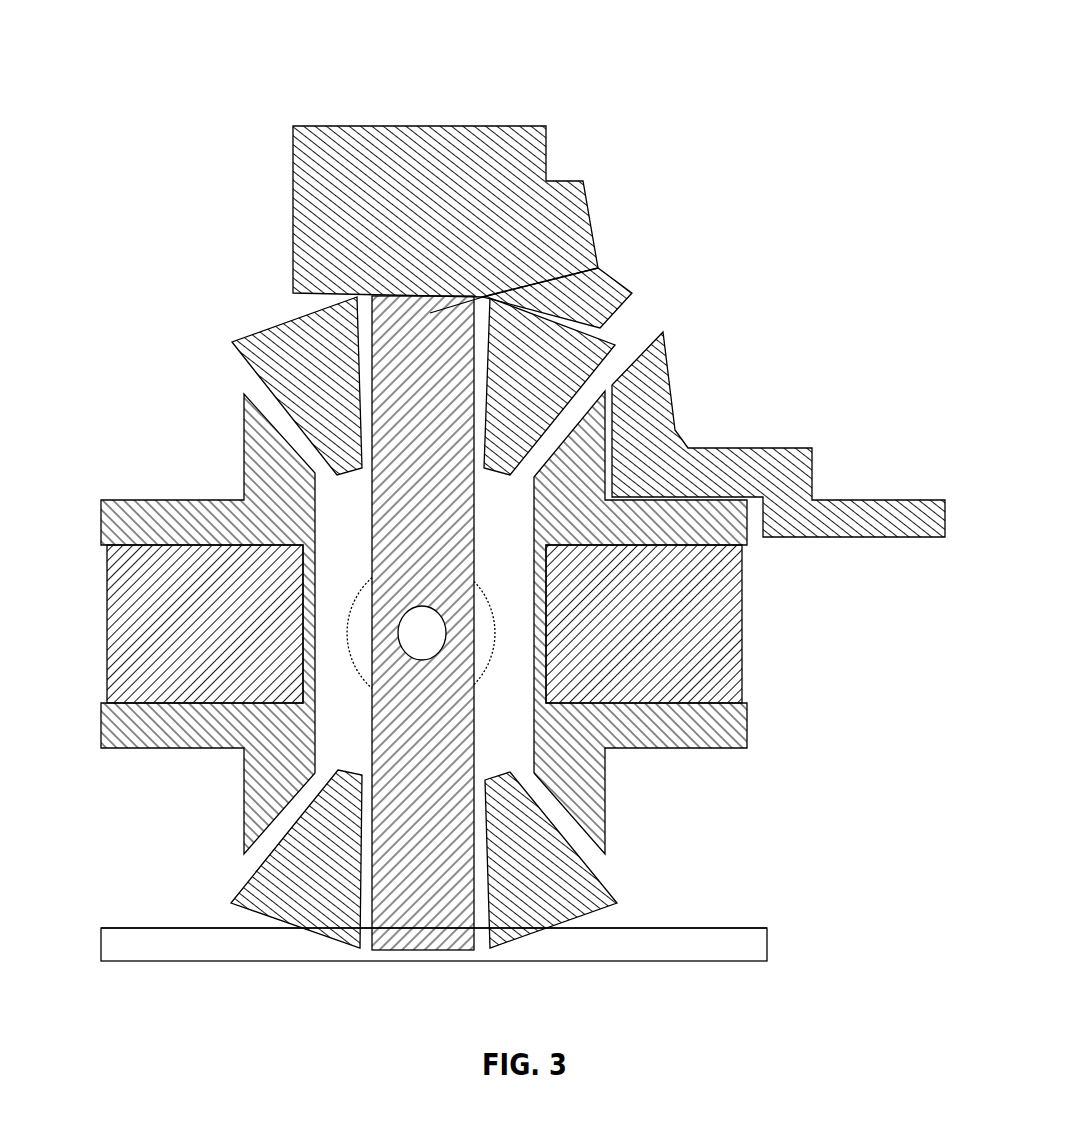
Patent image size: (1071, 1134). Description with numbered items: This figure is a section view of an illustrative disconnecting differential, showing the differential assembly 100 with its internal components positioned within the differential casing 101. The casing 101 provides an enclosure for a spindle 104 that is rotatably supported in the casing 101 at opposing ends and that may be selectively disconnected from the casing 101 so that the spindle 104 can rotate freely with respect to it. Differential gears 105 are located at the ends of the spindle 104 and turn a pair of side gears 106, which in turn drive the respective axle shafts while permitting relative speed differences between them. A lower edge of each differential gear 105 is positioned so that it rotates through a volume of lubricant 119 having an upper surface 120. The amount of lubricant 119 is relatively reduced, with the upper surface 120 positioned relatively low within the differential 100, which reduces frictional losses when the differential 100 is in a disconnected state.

The differential assembly 100 is at (190, 39).
The differential casing 101 is at (485, 228).
The spindle 104 is at (594, 269).
The differential gears 105 is at (293, 370).
The side gears 106 is at (252, 489).
The lubricant 119 is at (112, 944).
The upper surface 120 is at (212, 927).